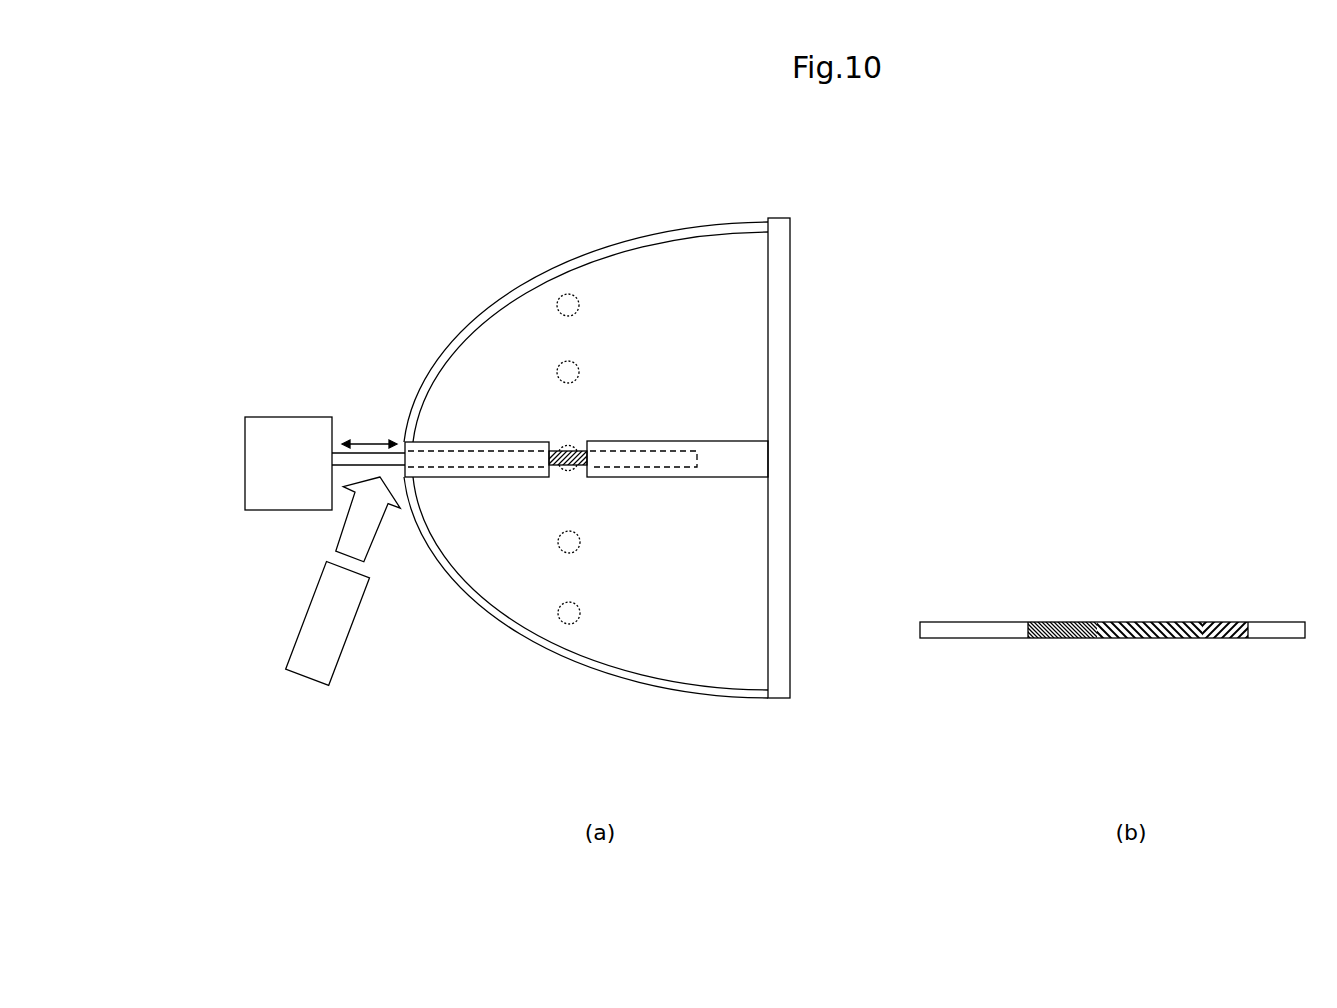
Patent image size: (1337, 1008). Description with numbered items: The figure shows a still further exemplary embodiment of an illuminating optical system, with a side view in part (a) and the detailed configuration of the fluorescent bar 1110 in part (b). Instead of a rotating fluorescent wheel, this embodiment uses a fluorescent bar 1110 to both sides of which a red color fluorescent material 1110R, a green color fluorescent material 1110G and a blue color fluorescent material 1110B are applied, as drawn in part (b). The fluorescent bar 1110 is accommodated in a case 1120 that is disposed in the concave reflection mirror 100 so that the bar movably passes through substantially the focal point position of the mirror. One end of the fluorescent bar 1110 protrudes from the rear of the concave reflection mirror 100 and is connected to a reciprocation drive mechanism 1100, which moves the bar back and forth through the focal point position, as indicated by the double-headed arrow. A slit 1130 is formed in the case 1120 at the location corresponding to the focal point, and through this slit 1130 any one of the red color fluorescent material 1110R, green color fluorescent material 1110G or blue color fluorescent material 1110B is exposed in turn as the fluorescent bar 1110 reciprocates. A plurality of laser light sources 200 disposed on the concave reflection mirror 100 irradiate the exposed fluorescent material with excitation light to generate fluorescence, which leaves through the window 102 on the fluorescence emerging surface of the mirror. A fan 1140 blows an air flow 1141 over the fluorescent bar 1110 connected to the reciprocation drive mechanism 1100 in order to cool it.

The concave reflection mirror 100 is at (625, 239).
The window 102 is at (792, 322).
The laser light source 200 is at (562, 360).
The reciprocation drive mechanism 1100 is at (250, 453).
The fluorescent bar 1110 is at (370, 460).
The case 1120 is at (468, 477).
The slit 1130 is at (563, 478).
The fan 1140 is at (288, 659).
The air flow 1141 is at (353, 518).
The red color fluorescent material 1110R is at (1072, 621).
The green color fluorescent material 1110G is at (1147, 621).
The blue color fluorescent material 1110B is at (1220, 621).